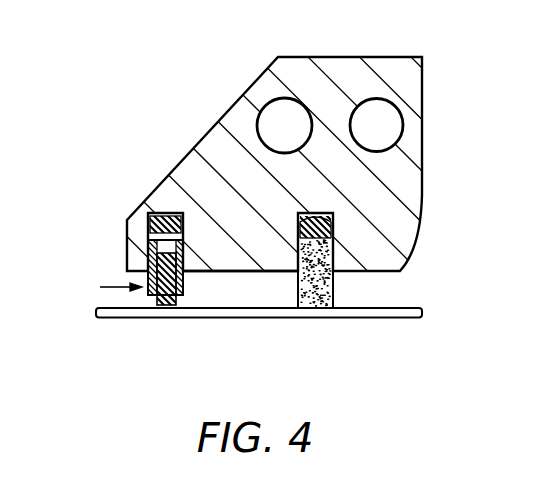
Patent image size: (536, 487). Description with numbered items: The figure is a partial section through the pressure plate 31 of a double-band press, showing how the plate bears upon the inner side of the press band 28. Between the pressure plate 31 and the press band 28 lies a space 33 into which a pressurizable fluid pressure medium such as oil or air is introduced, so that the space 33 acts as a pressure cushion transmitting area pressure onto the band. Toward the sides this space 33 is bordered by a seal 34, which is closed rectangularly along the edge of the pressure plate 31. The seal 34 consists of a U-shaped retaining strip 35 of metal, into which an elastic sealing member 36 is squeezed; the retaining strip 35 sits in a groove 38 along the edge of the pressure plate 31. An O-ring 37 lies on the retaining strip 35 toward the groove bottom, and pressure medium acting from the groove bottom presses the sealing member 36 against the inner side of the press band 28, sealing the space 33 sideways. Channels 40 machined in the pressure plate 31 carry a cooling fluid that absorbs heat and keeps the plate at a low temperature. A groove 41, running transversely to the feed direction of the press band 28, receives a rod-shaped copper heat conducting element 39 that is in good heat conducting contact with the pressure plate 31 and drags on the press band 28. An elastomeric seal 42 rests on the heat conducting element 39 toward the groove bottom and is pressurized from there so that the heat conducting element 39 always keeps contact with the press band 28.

The press band 28 is at (375, 314).
The pressure plate 31 is at (385, 72).
The space 33 is at (238, 295).
The seal 34 is at (100, 288).
The U-shaped retaining strip 35 is at (183, 280).
The elastic sealing member 36 is at (165, 300).
The O-ring 37 is at (162, 213).
The groove 38 is at (180, 213).
The heat conducting element 39 is at (317, 305).
The channels 40 is at (372, 110).
The groove 41 is at (333, 213).
The elastomeric seal 42 is at (333, 230).